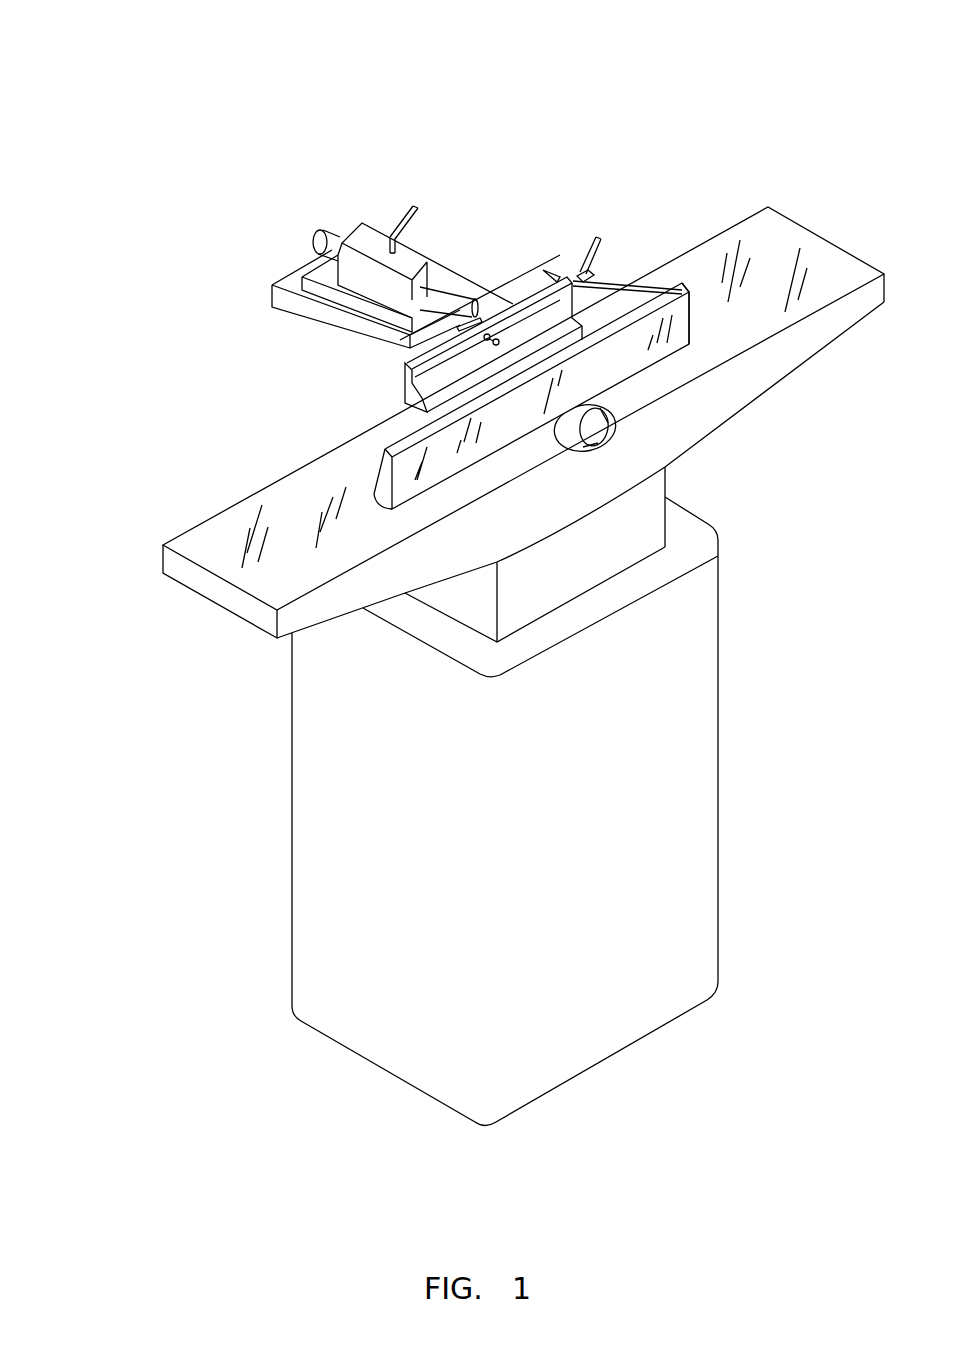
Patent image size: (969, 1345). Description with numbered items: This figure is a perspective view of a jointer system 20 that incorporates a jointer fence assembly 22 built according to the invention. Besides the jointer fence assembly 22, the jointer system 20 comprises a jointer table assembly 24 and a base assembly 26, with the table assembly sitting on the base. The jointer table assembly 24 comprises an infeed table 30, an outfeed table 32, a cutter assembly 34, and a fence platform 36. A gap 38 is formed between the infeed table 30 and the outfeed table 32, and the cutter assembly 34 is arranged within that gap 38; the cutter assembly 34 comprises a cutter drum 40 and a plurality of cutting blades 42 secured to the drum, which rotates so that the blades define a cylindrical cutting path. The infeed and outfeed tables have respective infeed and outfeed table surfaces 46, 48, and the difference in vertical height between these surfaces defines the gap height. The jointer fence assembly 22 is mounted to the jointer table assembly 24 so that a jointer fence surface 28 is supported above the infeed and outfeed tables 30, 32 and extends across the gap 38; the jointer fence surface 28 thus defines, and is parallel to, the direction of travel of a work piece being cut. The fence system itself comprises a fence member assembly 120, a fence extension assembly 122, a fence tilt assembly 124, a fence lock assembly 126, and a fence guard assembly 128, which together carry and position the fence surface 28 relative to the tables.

The jointer system 20 is at (491, 566).
The jointer fence assembly 22 is at (457, 289).
The jointer table assembly 24 is at (491, 420).
The base assembly 26 is at (572, 796).
The jointer fence surface 28 is at (632, 396).
The infeed table 30 is at (690, 418).
The outfeed table 32 is at (312, 631).
The cutter assembly 34 is at (664, 496).
The fence platform 36 is at (319, 311).
The gap 38 is at (567, 510).
The cutter drum 40 is at (665, 436).
The cutting blades 42 is at (693, 501).
The infeed table surface 46 is at (554, 398).
The outfeed table surface 48 is at (157, 591).
The fence member assembly 120 is at (786, 328).
The fence extension assembly 122 is at (426, 225).
The fence tilt assembly 124 is at (394, 356).
The fence lock assembly 126 is at (654, 222).
The fence guard assembly 128 is at (357, 392).